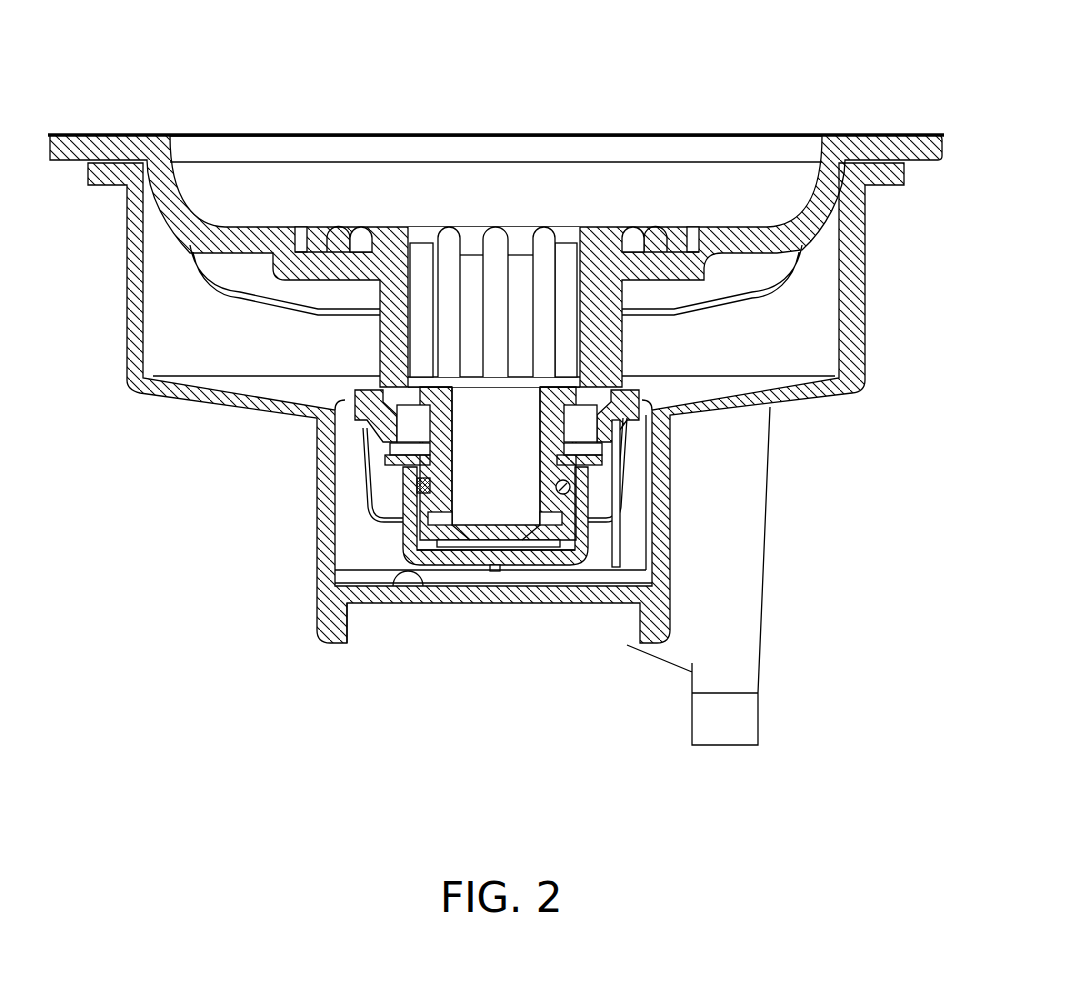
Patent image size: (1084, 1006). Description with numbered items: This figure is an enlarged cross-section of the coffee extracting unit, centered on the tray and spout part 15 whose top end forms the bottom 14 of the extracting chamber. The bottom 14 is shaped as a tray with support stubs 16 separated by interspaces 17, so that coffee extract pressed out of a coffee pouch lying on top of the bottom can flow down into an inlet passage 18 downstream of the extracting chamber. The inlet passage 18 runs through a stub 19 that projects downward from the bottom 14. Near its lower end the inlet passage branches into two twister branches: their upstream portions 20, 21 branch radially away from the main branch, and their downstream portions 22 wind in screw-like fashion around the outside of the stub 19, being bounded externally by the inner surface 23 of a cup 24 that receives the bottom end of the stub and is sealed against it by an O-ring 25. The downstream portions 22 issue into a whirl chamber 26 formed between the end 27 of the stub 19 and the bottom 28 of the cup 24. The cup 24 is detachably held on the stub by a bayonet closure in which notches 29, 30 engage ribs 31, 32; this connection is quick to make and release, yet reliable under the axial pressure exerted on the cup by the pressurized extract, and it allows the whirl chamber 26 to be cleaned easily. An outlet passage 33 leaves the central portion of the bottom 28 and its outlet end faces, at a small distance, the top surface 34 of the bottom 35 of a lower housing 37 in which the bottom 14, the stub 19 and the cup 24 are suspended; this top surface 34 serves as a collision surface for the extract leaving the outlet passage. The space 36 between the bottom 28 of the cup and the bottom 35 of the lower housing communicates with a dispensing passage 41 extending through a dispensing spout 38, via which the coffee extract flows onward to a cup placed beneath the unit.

The bottom 14 is at (725, 227).
The tray and spout part 15 is at (527, 134).
The support stubs 16 is at (308, 243).
The interspaces 17 is at (338, 243).
The inlet passage 18 is at (506, 452).
The stub 19 is at (624, 345).
The upstream portion of twister branch 20 is at (399, 553).
The upstream portion of twister branch 21 is at (560, 547).
The downstream portions of twister branches 22 is at (446, 518).
The inner surface of cup 23 is at (602, 498).
The cup 24 is at (353, 577).
The O-ring 25 is at (415, 490).
The whirl chamber 26 is at (537, 563).
The end of stub 27 is at (465, 568).
The bottom of cup 28 is at (577, 562).
The notch 29 is at (355, 402).
The notch 30 is at (634, 398).
The rib 31 is at (395, 450).
The rib 32 is at (600, 453).
The outlet passage 33 is at (492, 566).
The top surface / collision surface 34 is at (427, 575).
The bottom of lower housing 35 is at (377, 597).
The space 36 is at (350, 578).
The lower housing 37 is at (840, 393).
The dispensing spout 38 is at (760, 717).
The dispensing passage 41 is at (623, 562).